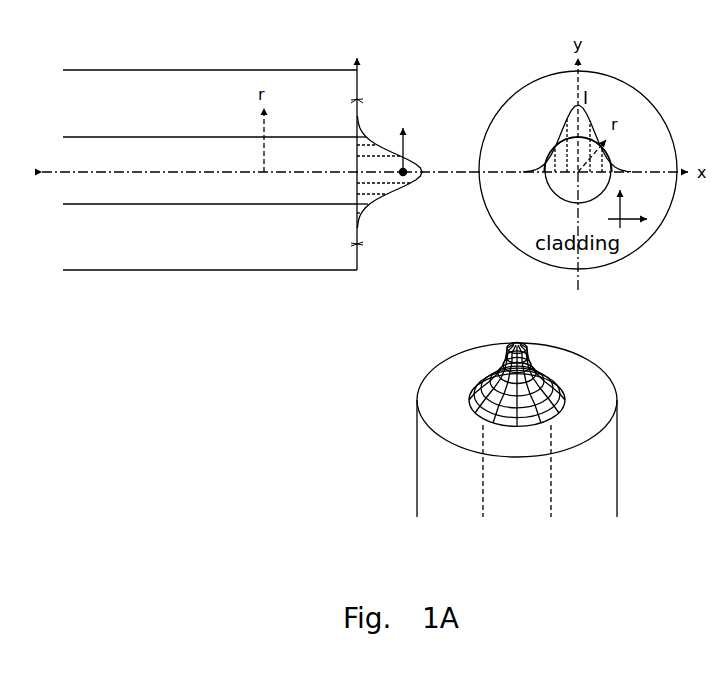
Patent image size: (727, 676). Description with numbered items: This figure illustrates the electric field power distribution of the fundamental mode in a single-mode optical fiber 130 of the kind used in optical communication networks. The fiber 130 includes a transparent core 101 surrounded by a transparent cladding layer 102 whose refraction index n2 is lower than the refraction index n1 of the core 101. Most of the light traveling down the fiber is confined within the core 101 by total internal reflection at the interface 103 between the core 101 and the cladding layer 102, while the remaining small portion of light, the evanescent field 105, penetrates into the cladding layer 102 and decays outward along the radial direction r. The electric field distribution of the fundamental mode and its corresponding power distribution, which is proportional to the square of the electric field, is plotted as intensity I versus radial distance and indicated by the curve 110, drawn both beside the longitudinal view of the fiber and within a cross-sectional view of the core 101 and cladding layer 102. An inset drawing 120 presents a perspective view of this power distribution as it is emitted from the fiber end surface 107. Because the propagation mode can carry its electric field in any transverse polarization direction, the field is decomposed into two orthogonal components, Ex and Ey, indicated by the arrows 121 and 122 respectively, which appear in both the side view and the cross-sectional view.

The core 101 is at (83, 155).
The cladding layer 102 is at (212, 89).
The interface 103 is at (238, 209).
The evanescent field 105 is at (366, 123).
The fiber end surface 107 is at (361, 81).
The electric field distribution and power distribution 110 is at (383, 204).
The inset drawing 120 is at (558, 378).
The Ex polarization component 121 is at (441, 157).
The Ey polarization component 122 is at (418, 104).
The optical fiber 130 is at (155, 66).